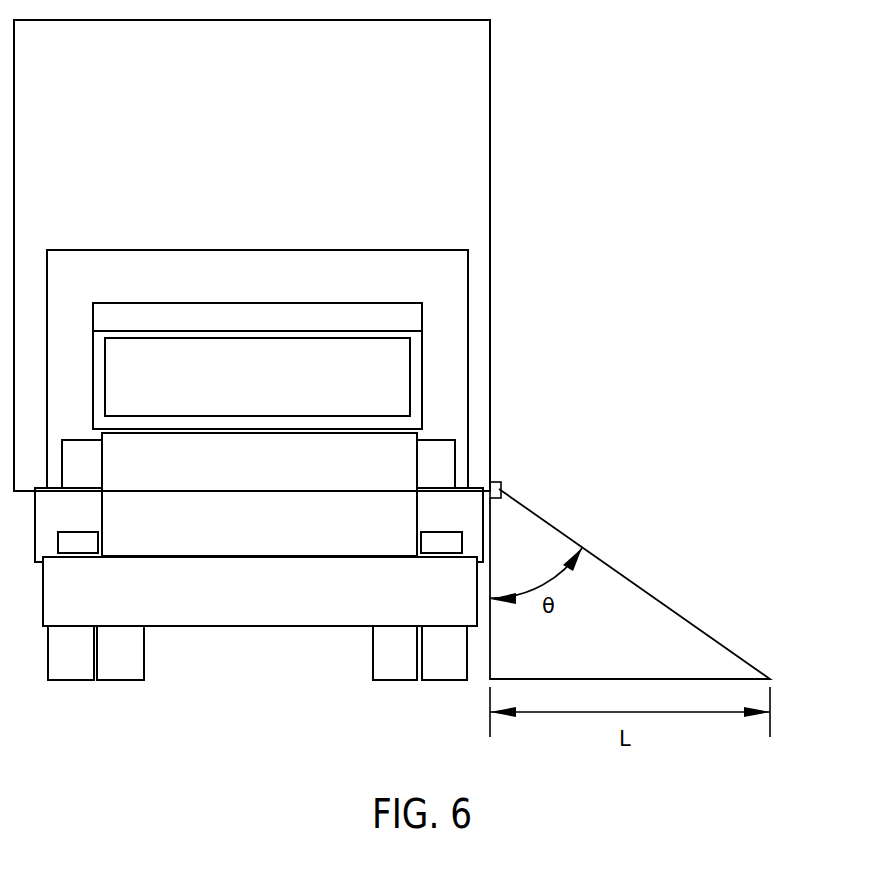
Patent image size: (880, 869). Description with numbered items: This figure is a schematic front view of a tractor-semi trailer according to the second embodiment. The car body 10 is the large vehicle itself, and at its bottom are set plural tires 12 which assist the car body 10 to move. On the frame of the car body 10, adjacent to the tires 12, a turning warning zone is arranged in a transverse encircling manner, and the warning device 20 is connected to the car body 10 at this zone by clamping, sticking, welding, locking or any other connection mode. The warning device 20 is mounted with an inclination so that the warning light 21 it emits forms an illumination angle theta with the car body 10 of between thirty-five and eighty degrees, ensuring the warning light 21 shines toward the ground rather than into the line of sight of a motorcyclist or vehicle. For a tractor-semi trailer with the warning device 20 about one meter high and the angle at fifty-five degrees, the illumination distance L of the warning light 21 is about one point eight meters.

The car body 10 is at (490, 238).
The tires 12 is at (71, 659).
The warning device 20 is at (501, 489).
The warning light 21 is at (630, 578).